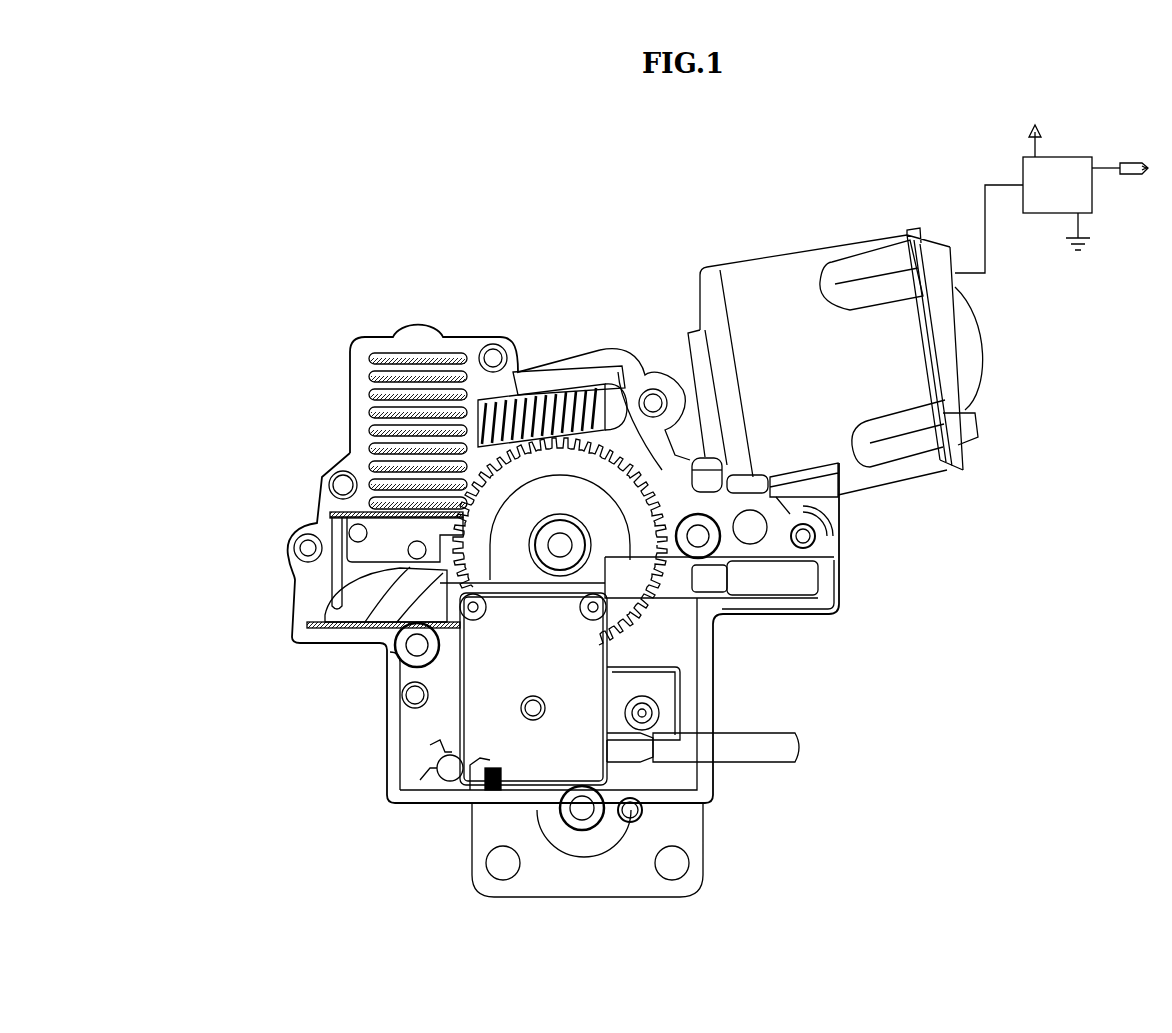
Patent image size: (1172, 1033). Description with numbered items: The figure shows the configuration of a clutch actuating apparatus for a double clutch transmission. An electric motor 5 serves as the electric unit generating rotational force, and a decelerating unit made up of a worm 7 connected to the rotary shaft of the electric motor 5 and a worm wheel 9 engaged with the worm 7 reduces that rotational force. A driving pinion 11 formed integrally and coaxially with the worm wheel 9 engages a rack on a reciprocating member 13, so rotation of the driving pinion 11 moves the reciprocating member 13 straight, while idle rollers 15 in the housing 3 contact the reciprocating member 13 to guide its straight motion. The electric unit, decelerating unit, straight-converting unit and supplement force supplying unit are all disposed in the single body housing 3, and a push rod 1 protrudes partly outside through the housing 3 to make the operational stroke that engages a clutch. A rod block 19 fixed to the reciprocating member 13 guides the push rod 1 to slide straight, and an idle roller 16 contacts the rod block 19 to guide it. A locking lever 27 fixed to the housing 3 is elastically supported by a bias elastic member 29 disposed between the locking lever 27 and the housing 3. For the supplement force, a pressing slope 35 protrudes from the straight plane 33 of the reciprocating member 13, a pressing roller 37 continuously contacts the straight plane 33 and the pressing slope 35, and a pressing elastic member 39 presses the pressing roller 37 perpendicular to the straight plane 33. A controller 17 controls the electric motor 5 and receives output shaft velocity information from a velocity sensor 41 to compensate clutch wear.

The push rod 1 is at (805, 745).
The housing 3 is at (351, 380).
The electric motor 5 is at (790, 272).
The worm 7 is at (567, 430).
The worm wheel 9 is at (597, 467).
The driving pinion 11 is at (553, 530).
The reciprocating member 13 is at (700, 575).
The idle rollers 15 is at (790, 536).
The idle roller 16 is at (620, 810).
The controller 17 is at (1072, 157).
The rod block 19 is at (590, 688).
The locking lever 27 is at (430, 778).
The bias elastic member 29 is at (493, 785).
The straight plane 33 is at (378, 618).
The pressing slope 35 is at (302, 574).
The pressing roller 37 is at (360, 616).
The pressing elastic member 39 is at (380, 435).
The velocity sensor 41 is at (1131, 160).